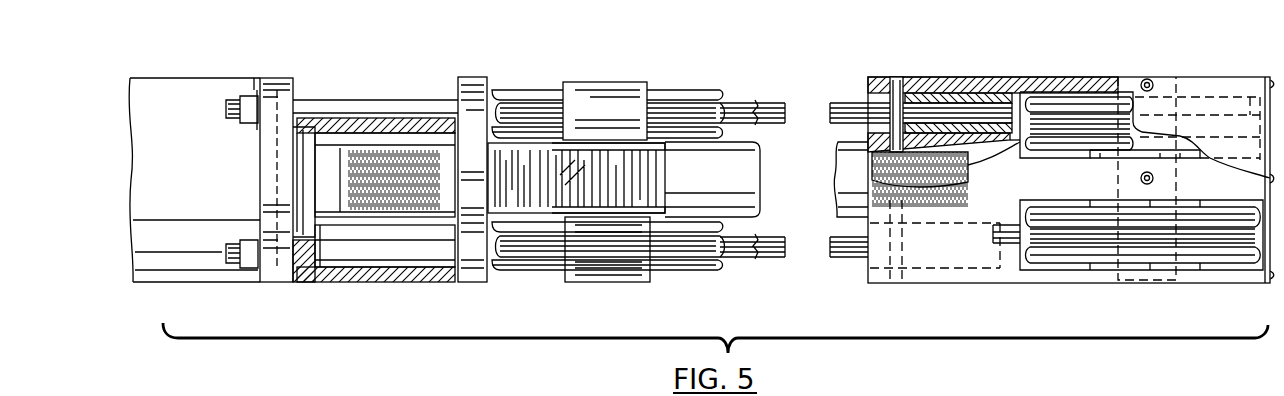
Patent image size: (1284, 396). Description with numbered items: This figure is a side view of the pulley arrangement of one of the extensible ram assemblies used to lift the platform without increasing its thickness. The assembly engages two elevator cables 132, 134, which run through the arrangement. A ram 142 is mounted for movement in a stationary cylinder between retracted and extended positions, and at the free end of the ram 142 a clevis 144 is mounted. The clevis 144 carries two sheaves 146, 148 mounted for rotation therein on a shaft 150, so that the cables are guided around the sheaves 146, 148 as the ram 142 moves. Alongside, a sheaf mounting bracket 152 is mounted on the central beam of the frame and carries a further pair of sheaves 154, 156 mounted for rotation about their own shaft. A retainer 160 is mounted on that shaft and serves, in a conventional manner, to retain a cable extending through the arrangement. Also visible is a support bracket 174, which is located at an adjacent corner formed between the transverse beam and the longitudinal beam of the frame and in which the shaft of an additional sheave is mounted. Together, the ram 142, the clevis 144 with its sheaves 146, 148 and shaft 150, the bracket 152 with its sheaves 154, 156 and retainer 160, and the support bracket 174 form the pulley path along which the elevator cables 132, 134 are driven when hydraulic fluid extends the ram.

The elevator cable 132 is at (730, 108).
The elevator cable 134 is at (765, 248).
The ram 142 is at (745, 171).
The clevis 144 is at (979, 83).
The sheave 146 is at (1077, 103).
The sheave 148 is at (1088, 250).
The shaft 150 is at (1176, 88).
The sheaf mounting bracket 152 is at (545, 165).
The sheave 154 is at (678, 93).
The sheave 156 is at (683, 268).
The retainer 160 is at (610, 95).
The support bracket 174 is at (400, 276).